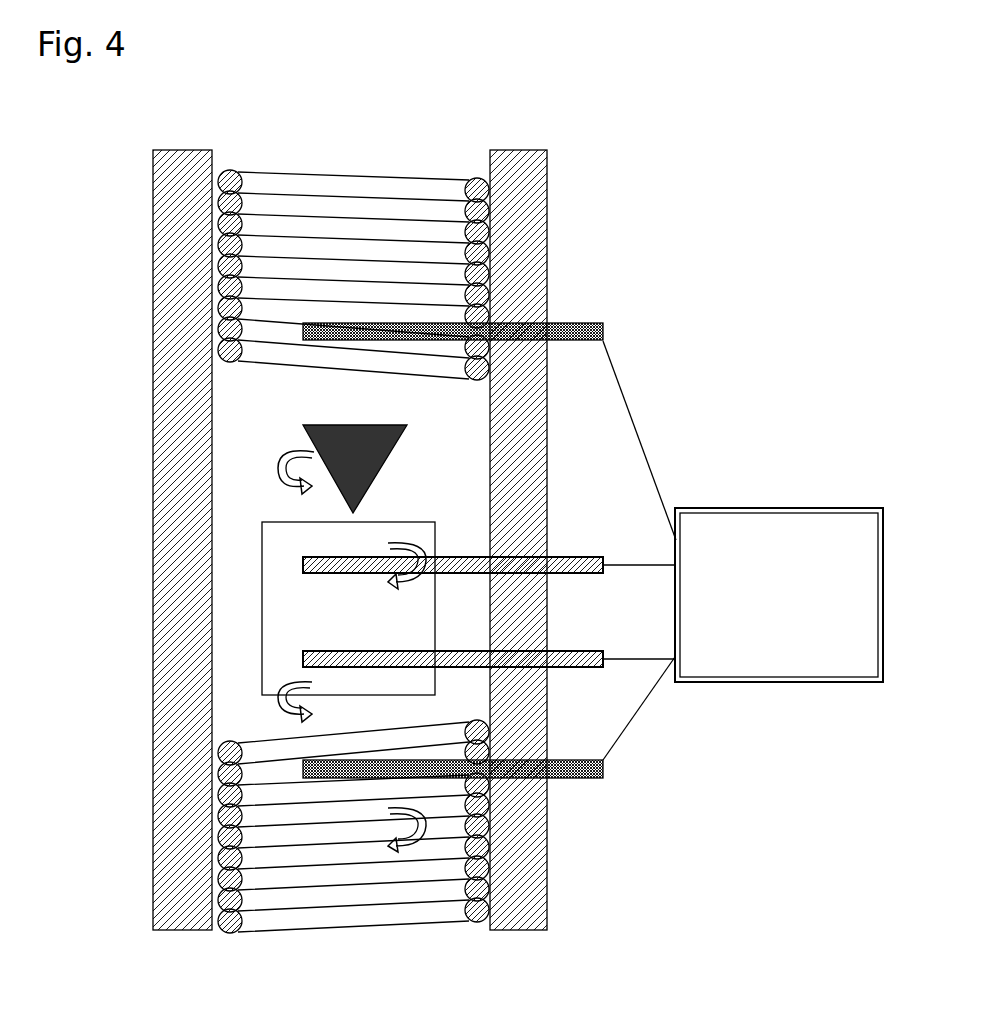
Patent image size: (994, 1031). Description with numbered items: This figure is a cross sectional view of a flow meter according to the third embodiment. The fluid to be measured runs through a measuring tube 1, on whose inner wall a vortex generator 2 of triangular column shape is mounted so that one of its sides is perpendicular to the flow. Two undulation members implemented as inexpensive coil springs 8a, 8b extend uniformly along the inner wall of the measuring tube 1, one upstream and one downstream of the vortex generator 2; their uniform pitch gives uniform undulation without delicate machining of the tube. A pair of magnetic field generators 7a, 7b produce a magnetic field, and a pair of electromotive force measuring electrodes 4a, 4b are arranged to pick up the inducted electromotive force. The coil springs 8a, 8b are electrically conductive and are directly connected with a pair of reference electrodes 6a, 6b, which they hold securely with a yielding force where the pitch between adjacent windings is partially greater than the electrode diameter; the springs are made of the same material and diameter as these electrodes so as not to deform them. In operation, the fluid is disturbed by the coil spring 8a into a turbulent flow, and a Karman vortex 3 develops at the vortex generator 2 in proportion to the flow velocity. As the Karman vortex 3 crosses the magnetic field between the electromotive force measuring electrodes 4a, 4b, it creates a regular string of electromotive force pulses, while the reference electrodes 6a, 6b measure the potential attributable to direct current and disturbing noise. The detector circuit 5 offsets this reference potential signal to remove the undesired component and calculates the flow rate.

The measuring tube 1 is at (520, 302).
The vortex generator 2 is at (325, 425).
The Karman vortex 3 is at (275, 470).
The electromotive force measuring electrode 4a is at (558, 556).
The electromotive force measuring electrode 4b is at (555, 651).
The detector circuit 5 is at (742, 684).
The reference electrode 6a is at (603, 325).
The reference electrode 6b is at (590, 780).
The magnetic field generator 7a is at (222, 619).
The magnetic field generator 7b is at (268, 572).
The coil spring 8a is at (232, 245).
The coil spring 8b is at (235, 835).